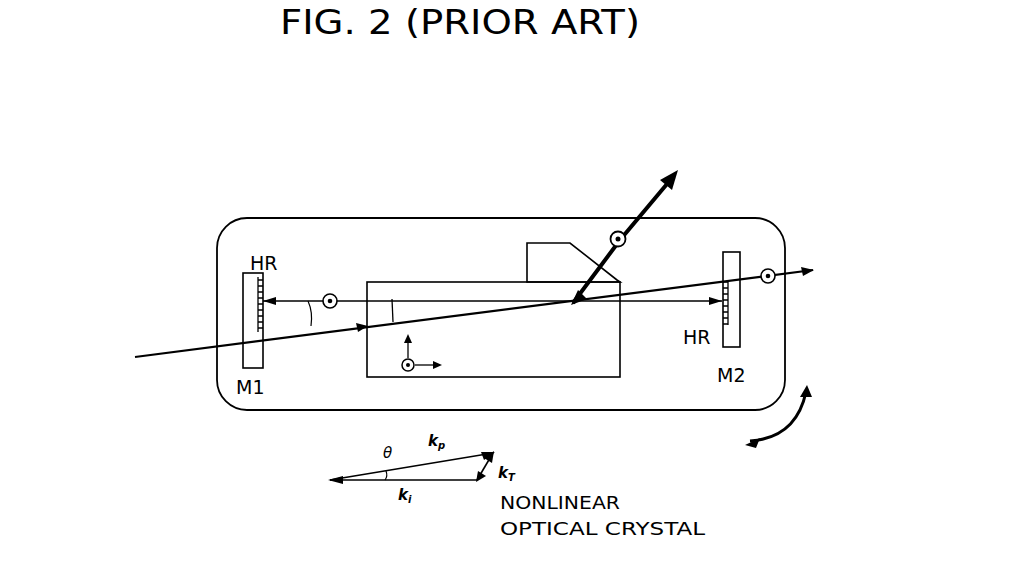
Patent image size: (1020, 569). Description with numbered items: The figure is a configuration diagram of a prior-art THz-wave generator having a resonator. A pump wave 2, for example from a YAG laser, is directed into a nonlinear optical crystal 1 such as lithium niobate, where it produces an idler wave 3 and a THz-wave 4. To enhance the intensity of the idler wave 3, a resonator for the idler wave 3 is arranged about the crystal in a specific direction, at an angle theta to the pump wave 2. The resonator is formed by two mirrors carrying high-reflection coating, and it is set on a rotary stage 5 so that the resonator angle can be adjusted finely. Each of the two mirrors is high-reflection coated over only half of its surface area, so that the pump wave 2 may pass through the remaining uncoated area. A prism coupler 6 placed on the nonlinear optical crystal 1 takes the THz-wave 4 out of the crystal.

The nonlinear optical crystal 1 is at (585, 367).
The pump wave 2 is at (168, 350).
The idler wave 3 is at (295, 300).
The THz-wave 4 is at (665, 178).
The rotary stage 5 is at (713, 412).
The prism coupler 6 is at (543, 253).